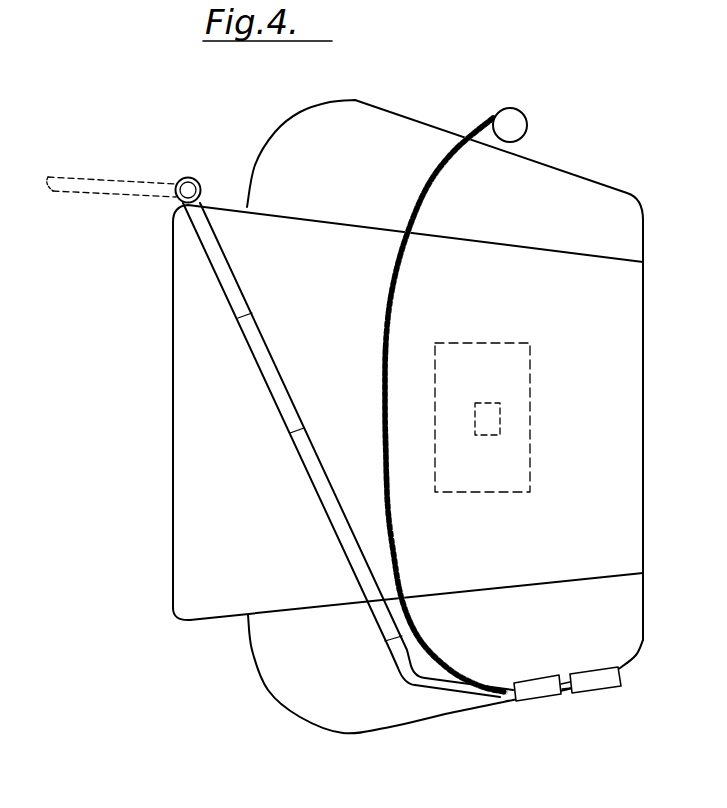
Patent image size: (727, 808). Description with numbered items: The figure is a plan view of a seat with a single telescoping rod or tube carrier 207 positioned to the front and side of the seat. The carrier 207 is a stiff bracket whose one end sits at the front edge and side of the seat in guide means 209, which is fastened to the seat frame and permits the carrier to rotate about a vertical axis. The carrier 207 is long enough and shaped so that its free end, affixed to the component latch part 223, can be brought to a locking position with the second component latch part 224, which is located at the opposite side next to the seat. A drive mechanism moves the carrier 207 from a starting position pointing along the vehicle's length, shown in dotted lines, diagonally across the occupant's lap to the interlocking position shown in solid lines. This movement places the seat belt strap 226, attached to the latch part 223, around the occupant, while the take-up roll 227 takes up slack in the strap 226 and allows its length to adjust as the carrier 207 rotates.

The carrier 207 is at (87, 178).
The guide means 209 is at (190, 178).
The component latch part 223 is at (535, 698).
The second component latch part 224 is at (602, 680).
The seat belt strap 226 is at (397, 307).
The take-up roll 227 is at (510, 120).